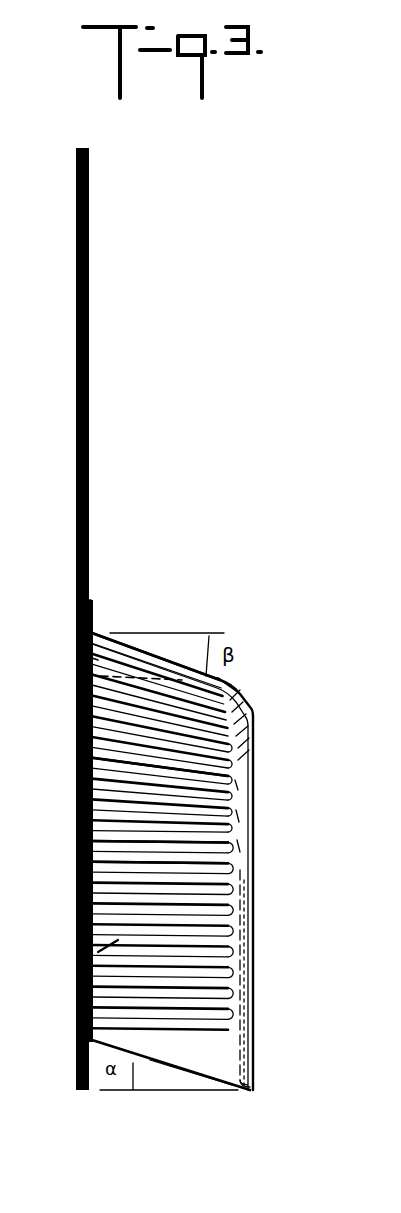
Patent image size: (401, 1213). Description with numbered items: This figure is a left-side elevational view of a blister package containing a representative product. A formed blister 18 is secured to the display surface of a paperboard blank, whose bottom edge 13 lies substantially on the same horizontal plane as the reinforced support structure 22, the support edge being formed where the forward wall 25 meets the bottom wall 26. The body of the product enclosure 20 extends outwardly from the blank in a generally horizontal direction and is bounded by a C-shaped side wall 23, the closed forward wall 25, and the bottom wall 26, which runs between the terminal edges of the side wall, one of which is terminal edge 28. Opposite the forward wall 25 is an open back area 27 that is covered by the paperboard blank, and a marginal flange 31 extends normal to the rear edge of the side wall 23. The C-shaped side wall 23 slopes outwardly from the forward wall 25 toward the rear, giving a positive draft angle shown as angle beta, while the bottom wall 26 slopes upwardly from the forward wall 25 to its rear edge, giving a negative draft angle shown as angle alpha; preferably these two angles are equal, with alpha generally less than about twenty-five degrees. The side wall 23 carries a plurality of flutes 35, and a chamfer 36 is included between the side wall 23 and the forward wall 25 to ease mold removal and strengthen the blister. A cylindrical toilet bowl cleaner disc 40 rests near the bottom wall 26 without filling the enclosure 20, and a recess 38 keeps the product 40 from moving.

The bottom edge 13 is at (80, 1094).
The marginal flange 31 is at (94, 605).
The cylindrical toilet bowl cleaner disc 40 is at (70, 662).
The blister 18 is at (189, 861).
The chamfer 36 is at (243, 697).
The recess 38 is at (265, 730).
The forward wall 25 is at (254, 924).
The product enclosure 20 is at (75, 971).
The open back area 27 is at (82, 762).
The C-shaped side wall 23 is at (78, 843).
The flutes 35 is at (78, 876).
The terminal edge 28 is at (160, 1058).
The bottom wall 26 is at (178, 1062).
The support structure 22 is at (246, 1086).